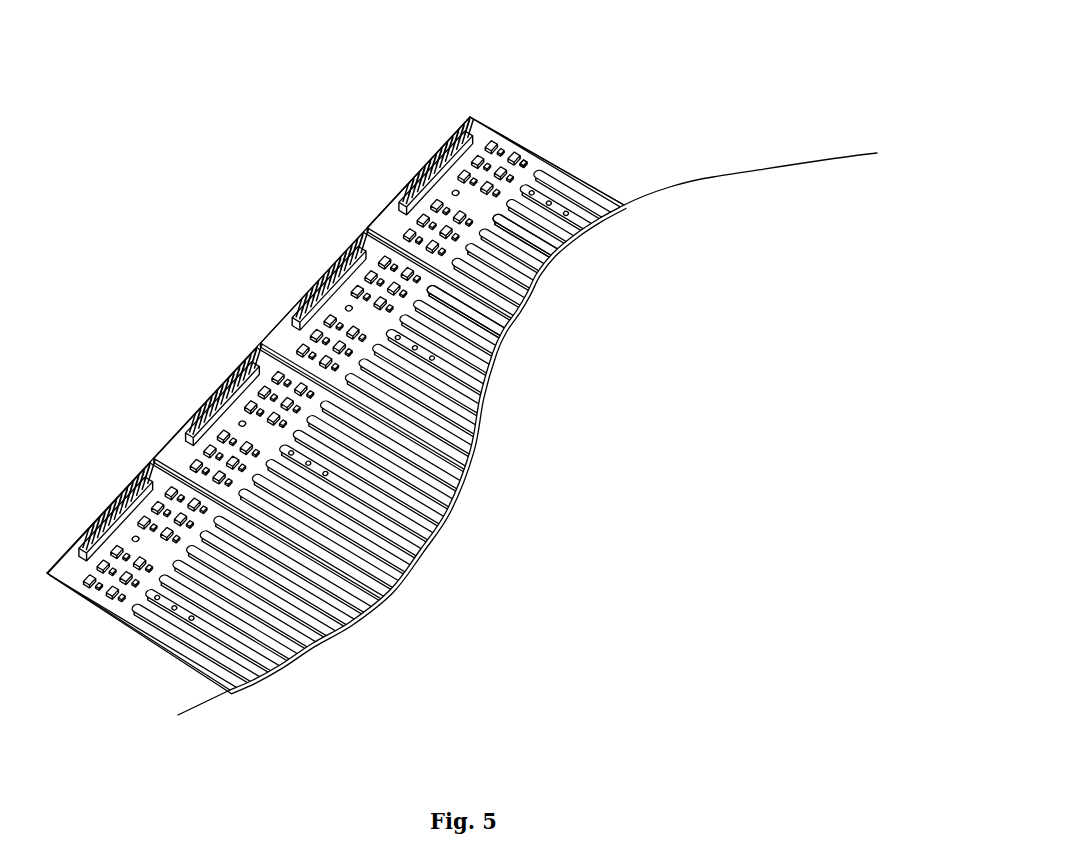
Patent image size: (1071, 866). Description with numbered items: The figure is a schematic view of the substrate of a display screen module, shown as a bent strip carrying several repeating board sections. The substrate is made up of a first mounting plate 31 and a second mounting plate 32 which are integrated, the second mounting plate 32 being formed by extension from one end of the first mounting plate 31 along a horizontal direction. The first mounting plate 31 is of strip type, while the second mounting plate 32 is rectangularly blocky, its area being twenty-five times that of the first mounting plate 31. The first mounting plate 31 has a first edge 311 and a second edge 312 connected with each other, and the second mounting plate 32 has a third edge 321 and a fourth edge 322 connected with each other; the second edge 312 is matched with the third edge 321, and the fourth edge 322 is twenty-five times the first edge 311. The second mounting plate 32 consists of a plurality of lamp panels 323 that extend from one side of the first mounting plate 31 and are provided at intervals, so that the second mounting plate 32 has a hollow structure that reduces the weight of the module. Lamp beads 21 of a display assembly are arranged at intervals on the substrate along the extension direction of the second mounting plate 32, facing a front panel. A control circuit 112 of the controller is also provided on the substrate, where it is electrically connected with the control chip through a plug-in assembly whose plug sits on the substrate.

The lamp bead 21 is at (103, 605).
The first mounting plate 31 is at (283, 338).
The first edge 311 is at (470, 117).
The second edge 312 is at (437, 287).
The control circuit 112 is at (497, 217).
The third edge 321 is at (530, 157).
The fourth edge 322 is at (598, 188).
The lamp panel 323 is at (413, 475).
The second mounting plate 32 is at (137, 617).